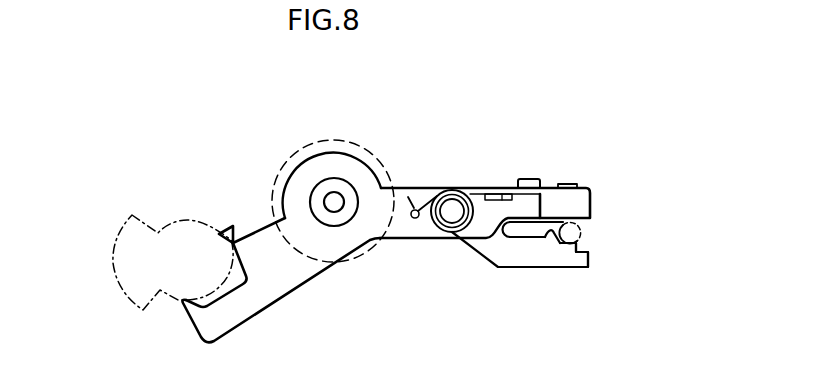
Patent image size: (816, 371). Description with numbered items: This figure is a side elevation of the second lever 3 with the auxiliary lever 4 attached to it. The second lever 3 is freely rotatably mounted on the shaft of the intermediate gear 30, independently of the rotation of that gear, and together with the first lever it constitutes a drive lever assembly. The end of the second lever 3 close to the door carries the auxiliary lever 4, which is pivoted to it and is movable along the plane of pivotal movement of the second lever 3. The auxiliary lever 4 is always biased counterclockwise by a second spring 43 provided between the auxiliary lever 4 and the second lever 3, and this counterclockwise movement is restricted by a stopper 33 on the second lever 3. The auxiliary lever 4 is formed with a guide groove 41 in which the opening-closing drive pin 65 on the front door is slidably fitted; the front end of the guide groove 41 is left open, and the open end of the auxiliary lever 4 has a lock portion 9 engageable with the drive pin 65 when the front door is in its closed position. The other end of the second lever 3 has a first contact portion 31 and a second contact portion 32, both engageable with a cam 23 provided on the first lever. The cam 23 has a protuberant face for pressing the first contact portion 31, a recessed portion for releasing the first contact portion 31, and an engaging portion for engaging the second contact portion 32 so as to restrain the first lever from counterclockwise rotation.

The second lever 3 is at (322, 245).
The auxiliary lever 4 is at (508, 250).
The lock portion 9 is at (580, 245).
The cam 23 is at (174, 221).
The intermediate gear 30 is at (327, 139).
The first contact portion 31 is at (232, 232).
The second contact portion 32 is at (183, 300).
The stopper 33 is at (534, 178).
The guide groove 41 is at (549, 246).
The second spring 43 is at (503, 188).
The opening-closing drive pin 65 is at (583, 233).